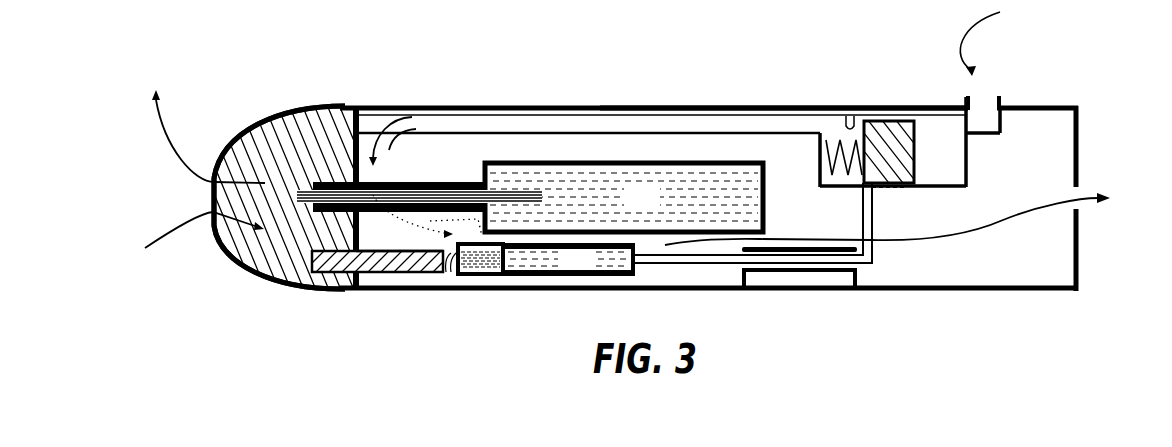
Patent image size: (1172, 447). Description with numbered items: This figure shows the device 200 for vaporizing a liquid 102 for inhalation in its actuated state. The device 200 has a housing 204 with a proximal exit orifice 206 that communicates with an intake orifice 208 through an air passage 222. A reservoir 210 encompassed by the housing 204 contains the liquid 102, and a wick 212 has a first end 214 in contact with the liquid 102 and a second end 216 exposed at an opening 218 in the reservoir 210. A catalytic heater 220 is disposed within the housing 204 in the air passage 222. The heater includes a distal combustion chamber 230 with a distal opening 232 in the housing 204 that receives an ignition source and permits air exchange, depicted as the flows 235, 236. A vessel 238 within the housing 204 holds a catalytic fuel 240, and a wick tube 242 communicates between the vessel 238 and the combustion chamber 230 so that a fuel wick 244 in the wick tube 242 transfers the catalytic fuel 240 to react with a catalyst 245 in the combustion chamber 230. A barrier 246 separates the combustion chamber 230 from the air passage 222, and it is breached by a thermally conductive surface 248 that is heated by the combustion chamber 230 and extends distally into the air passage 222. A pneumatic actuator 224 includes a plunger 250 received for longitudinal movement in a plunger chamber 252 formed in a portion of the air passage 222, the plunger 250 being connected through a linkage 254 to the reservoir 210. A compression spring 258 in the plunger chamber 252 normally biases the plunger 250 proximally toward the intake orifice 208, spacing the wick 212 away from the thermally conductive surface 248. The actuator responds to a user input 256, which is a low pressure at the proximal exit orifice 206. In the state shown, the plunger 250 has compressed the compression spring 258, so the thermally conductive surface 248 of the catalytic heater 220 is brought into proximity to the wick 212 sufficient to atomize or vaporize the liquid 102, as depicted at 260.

The liquid 102 is at (590, 266).
The device 200 is at (330, 97).
The housing 204 is at (740, 106).
The proximal exit orifice 206 is at (1082, 184).
The intake orifice 208 is at (986, 104).
The reservoir 210 is at (612, 263).
The wick 212 is at (497, 274).
The first end 214 is at (530, 270).
The second end 216 is at (442, 272).
The opening 218 is at (448, 274).
The catalytic heater 220 is at (266, 298).
The air passage 222 is at (637, 118).
The pneumatic actuator 224 is at (897, 271).
The distal combustion chamber 230 is at (243, 147).
The distal opening 232 is at (204, 193).
The air exchange 235 is at (190, 222).
The air exchange 236 is at (192, 173).
The vessel 238 is at (573, 187).
The catalytic fuel 240 is at (657, 209).
The wick tube 242 is at (455, 180).
The fuel wick 244 is at (432, 180).
The catalyst 245 is at (317, 160).
The barrier 246 is at (362, 128).
The thermally conductive surface 248 is at (378, 275).
The plunger 250 is at (878, 121).
The plunger chamber 252 is at (851, 116).
The linkage 254 is at (712, 265).
The input 256 is at (1007, 220).
The compression spring 258 is at (840, 138).
The atomization or vaporization 260 is at (458, 278).